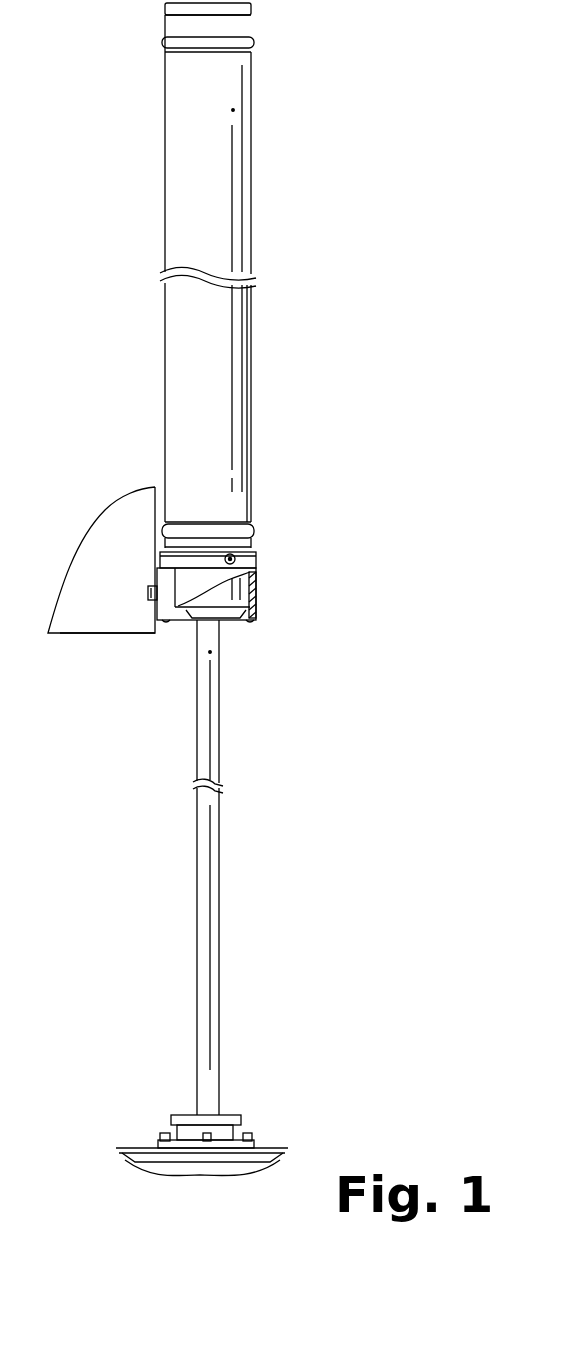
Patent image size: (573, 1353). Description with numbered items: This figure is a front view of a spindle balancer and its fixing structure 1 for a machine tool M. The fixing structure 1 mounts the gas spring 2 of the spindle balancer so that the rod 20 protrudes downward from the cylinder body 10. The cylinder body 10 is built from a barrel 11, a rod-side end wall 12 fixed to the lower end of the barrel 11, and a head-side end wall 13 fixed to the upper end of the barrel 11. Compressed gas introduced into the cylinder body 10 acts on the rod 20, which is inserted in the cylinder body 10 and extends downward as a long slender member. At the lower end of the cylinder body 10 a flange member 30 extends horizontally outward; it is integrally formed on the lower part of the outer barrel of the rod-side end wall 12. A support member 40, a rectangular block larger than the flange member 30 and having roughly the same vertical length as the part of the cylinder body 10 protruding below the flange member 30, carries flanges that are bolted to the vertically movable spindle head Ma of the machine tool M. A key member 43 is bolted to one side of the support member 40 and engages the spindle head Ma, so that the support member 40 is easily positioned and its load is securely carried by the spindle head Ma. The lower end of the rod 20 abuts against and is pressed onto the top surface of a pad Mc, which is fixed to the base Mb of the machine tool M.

The fixing structure 1 is at (234, 559).
The gas spring 2 is at (276, 158).
The cylinder body 10 is at (249, 262).
The barrel 11 is at (252, 410).
The rod-side end wall 12 is at (252, 543).
The head-side end wall 13 is at (251, 32).
The rod 20 is at (220, 895).
The flange member 30 is at (258, 558).
The support member 40 is at (216, 618).
The key member 43 is at (148, 594).
The machine tool M is at (97, 497).
The spindle head Ma is at (97, 625).
The base Mb is at (198, 1172).
The pad Mc is at (238, 1115).